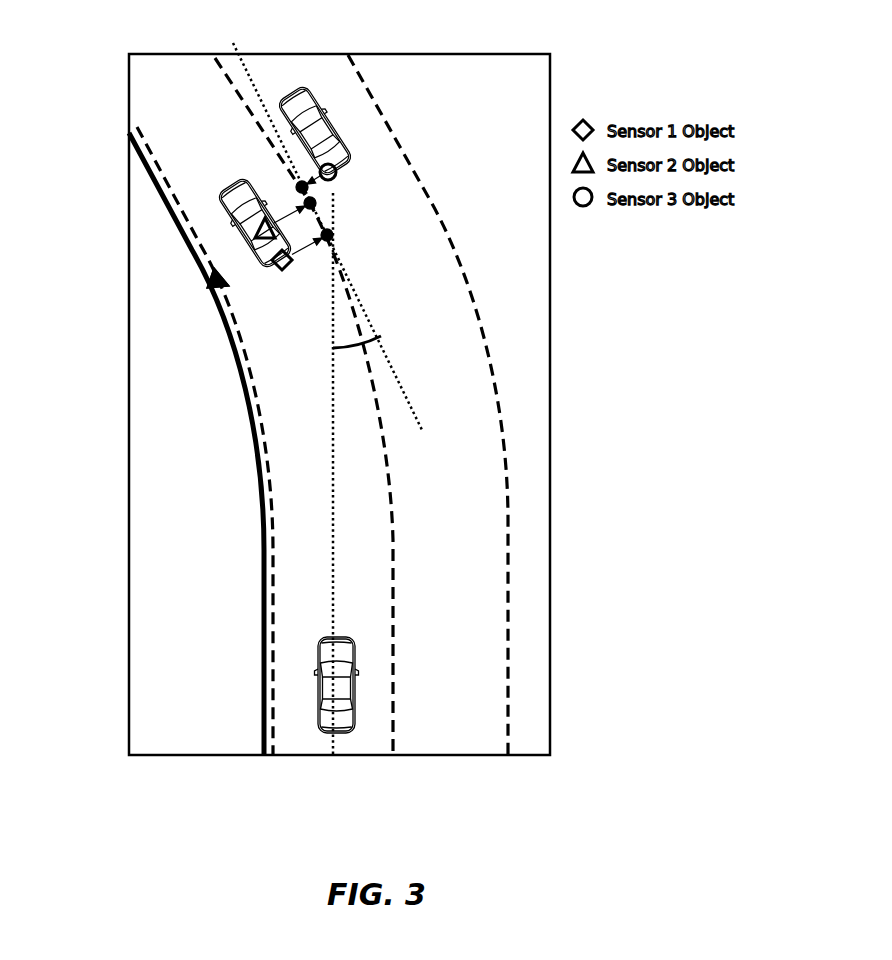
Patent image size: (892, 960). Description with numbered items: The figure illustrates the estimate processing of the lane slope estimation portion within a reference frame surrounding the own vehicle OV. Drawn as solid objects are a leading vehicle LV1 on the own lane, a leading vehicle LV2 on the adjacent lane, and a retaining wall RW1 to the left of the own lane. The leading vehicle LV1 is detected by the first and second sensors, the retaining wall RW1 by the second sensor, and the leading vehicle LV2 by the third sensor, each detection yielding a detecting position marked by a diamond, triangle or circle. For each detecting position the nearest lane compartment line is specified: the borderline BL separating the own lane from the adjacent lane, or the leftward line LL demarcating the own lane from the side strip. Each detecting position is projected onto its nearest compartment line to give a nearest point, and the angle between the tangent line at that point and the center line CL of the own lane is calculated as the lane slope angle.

The leading vehicle LV1 is at (278, 270).
The leading vehicle LV2 is at (313, 112).
The own vehicle OV is at (320, 690).
The retaining wall RW1 is at (240, 385).
The leftward line LL is at (277, 697).
The borderline BL is at (393, 697).
The center line CL is at (333, 555).